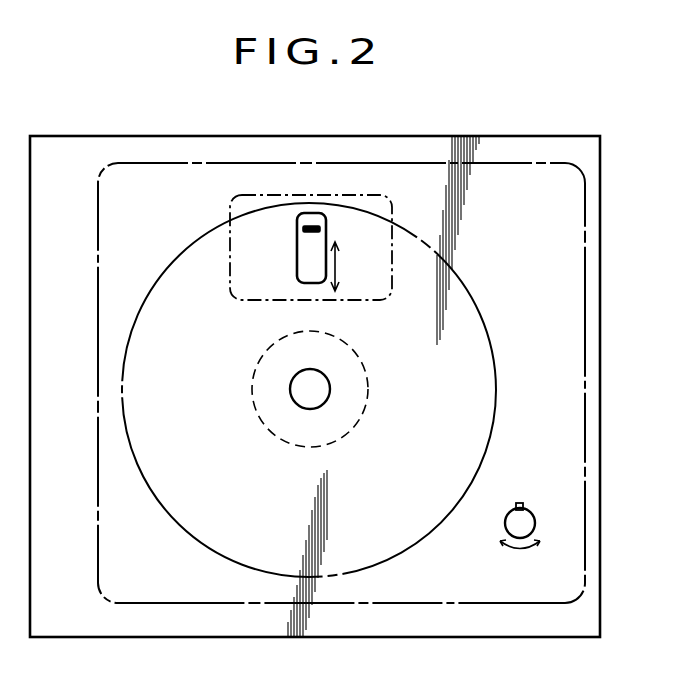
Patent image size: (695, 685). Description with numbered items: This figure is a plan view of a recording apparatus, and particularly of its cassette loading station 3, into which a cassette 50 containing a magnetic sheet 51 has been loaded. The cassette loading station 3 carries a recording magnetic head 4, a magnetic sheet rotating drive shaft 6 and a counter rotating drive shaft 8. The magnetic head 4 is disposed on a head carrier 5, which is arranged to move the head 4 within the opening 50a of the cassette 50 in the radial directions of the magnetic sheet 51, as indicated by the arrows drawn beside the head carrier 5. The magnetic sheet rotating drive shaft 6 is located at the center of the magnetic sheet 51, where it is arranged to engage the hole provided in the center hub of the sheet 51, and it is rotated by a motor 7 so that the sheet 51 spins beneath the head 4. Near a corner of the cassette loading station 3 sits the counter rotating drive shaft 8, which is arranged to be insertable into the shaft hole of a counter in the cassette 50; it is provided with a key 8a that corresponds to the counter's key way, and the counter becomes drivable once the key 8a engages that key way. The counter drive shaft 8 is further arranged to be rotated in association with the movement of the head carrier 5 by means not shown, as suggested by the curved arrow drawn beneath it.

The cassette loading station 3 is at (545, 146).
The cassette 50 is at (417, 163).
The opening 50a is at (338, 192).
The magnetic sheet 51 is at (475, 307).
The recording magnetic head 4 is at (310, 223).
The head carrier 5 is at (297, 215).
The magnetic sheet rotating drive shaft 6 is at (297, 378).
The motor 7 is at (254, 378).
The counter rotating drive shaft 8 is at (527, 524).
The key 8a is at (525, 506).